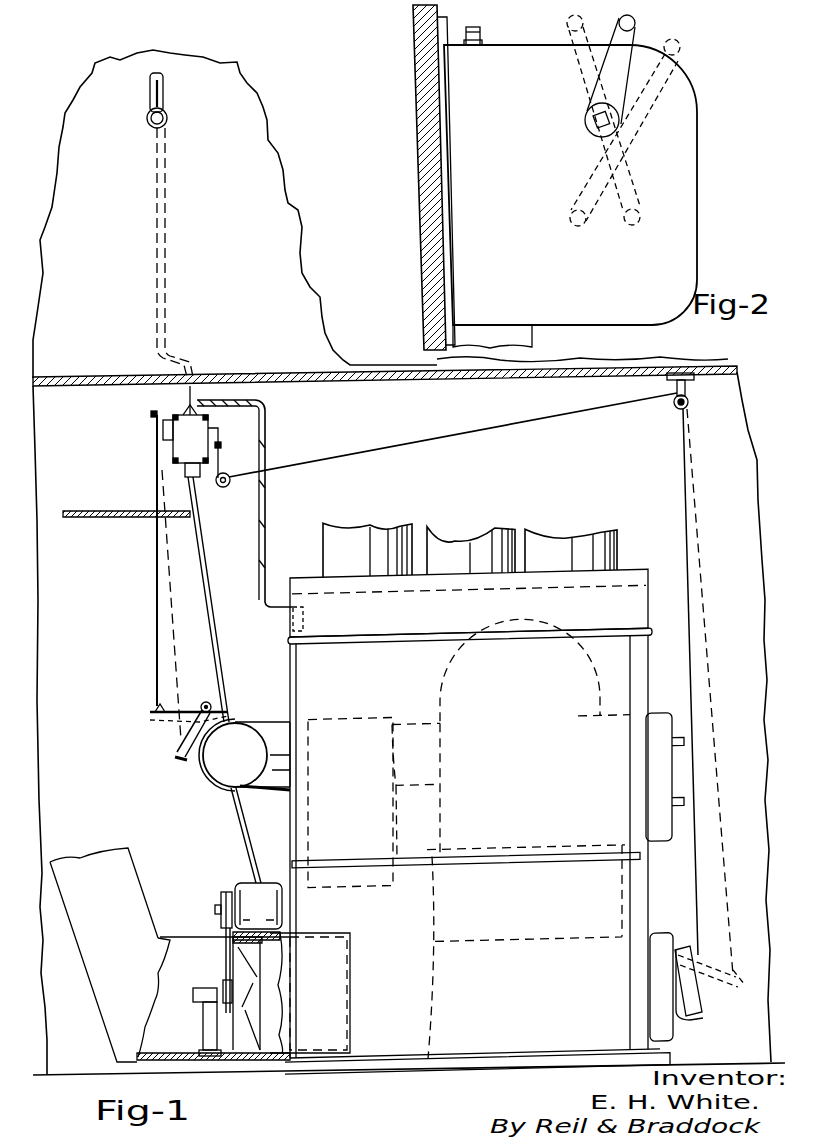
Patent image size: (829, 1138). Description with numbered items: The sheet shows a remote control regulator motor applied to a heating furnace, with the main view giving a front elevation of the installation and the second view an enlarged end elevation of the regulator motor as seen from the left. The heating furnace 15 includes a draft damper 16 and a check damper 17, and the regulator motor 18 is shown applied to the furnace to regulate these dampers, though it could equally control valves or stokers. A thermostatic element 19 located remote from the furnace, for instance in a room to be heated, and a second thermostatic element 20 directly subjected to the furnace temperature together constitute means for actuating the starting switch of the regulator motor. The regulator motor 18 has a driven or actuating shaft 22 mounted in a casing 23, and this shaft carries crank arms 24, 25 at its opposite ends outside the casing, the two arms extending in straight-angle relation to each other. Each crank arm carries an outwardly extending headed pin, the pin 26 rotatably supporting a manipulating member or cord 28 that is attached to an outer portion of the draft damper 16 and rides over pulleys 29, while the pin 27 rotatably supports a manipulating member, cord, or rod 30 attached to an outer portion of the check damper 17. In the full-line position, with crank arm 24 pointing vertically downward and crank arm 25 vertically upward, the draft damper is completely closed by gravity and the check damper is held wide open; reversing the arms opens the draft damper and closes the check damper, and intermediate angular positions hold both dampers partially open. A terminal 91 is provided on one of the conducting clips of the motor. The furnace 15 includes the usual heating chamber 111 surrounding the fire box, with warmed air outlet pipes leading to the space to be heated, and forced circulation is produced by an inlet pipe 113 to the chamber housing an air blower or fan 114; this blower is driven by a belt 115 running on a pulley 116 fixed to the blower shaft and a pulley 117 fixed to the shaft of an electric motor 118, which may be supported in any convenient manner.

In FIG. 1, the heating furnace 15 is at (484, 821).
In FIG. 1, the draft damper 16 is at (708, 1023).
In FIG. 1, the check damper 17 is at (185, 740).
In FIG. 1, the regulator motor 18 is at (178, 452).
In FIG. 2, the regulator motor 18 is at (710, 219).
In FIG. 1, the thermostatic element 19 is at (165, 108).
In FIG. 1, the thermostatic element 20 is at (292, 626).
In FIG. 2, the driven or actuating shaft 22 is at (620, 123).
In FIG. 2, the casing 23 is at (672, 152).
In FIG. 1, the crank arm 24 is at (220, 438).
In FIG. 1, the crank arm 25 is at (178, 416).
In FIG. 2, the crank arm 25 is at (633, 33).
In FIG. 1, the headed pin 26 is at (222, 446).
In FIG. 1, the headed pin 27 is at (152, 415).
In FIG. 1, the manipulating member or cord 28 is at (426, 450).
In FIG. 1, the pulleys 29 is at (224, 488).
In FIG. 1, the manipulating member, cord, or rod 30 is at (156, 603).
In FIG. 2, the terminal 91 is at (482, 34).
In FIG. 1, the heating chamber 111 is at (330, 684).
In FIG. 1, the inlet pipe 113 is at (180, 960).
In FIG. 1, the air blower or fan 114 is at (250, 1037).
In FIG. 1, the belt 115 is at (224, 957).
In FIG. 1, the pulley 116 is at (222, 985).
In FIG. 1, the pulley 117 is at (222, 896).
In FIG. 1, the electric motor 118 is at (264, 885).